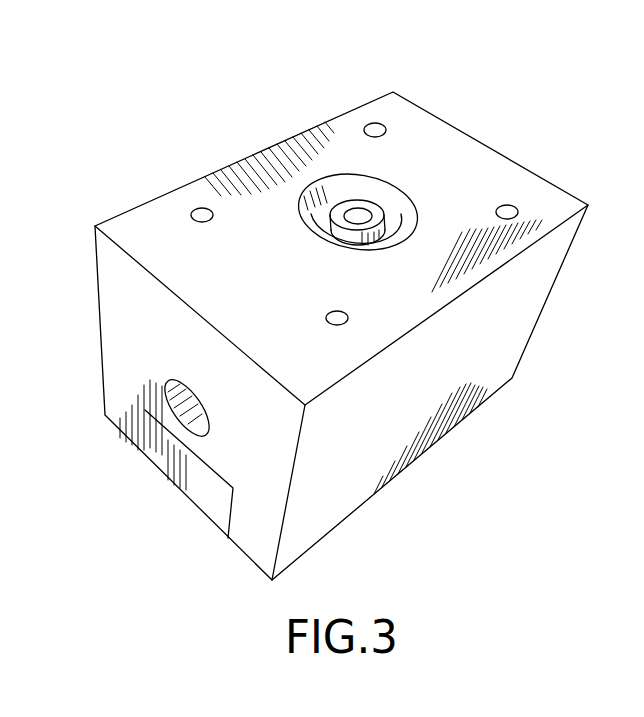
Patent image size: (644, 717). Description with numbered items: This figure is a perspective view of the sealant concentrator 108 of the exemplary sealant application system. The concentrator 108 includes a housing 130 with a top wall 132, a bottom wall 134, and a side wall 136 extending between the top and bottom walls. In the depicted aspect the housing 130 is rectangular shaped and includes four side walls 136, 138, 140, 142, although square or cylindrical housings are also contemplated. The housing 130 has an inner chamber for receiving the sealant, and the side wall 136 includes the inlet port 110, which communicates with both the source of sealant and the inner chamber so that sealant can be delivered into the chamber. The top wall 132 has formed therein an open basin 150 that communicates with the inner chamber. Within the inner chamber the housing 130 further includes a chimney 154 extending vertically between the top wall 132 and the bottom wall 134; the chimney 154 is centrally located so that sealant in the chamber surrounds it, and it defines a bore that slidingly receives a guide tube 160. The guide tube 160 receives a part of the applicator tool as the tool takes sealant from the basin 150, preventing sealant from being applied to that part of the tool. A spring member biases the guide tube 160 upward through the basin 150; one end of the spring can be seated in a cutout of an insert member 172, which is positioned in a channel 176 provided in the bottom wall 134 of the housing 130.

The concentrator 108 is at (147, 92).
The inlet port 110 is at (198, 423).
The housing 130 is at (478, 165).
The top wall 132 is at (158, 212).
The bottom wall 134 is at (122, 437).
The side wall 136 is at (118, 362).
The side wall 138 is at (558, 273).
The side wall 140 is at (345, 509).
The side wall 142 is at (98, 302).
The open basin 150 is at (365, 192).
The chimney 154 is at (315, 217).
The guide tube 160 is at (357, 243).
The insert member 172 is at (210, 502).
The channel 176 is at (213, 470).